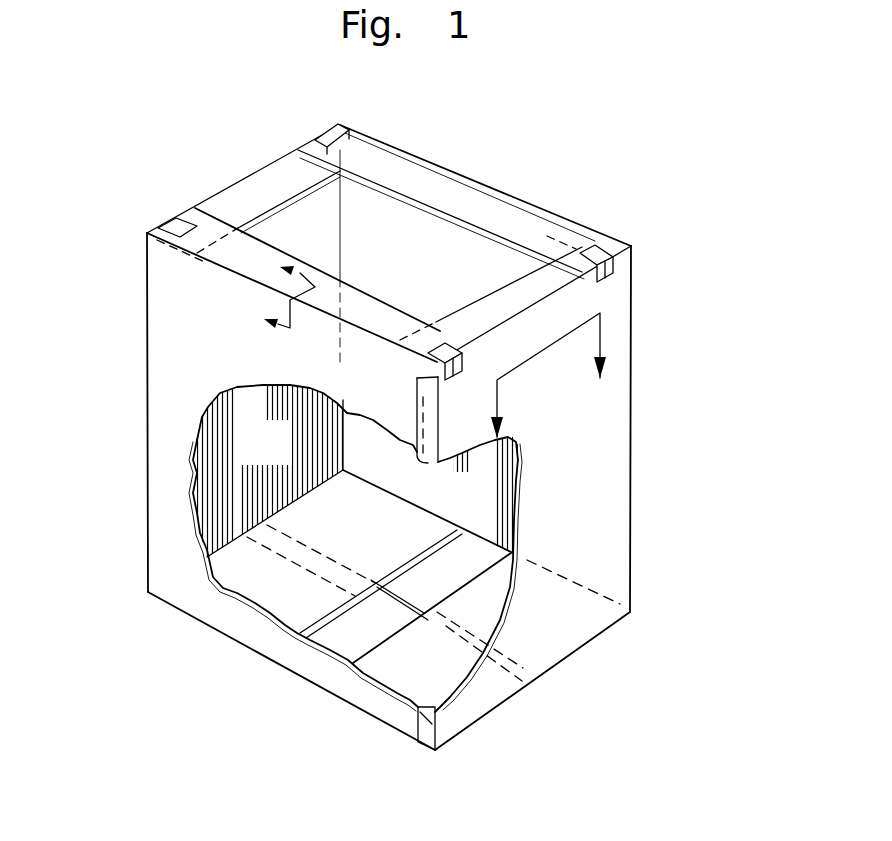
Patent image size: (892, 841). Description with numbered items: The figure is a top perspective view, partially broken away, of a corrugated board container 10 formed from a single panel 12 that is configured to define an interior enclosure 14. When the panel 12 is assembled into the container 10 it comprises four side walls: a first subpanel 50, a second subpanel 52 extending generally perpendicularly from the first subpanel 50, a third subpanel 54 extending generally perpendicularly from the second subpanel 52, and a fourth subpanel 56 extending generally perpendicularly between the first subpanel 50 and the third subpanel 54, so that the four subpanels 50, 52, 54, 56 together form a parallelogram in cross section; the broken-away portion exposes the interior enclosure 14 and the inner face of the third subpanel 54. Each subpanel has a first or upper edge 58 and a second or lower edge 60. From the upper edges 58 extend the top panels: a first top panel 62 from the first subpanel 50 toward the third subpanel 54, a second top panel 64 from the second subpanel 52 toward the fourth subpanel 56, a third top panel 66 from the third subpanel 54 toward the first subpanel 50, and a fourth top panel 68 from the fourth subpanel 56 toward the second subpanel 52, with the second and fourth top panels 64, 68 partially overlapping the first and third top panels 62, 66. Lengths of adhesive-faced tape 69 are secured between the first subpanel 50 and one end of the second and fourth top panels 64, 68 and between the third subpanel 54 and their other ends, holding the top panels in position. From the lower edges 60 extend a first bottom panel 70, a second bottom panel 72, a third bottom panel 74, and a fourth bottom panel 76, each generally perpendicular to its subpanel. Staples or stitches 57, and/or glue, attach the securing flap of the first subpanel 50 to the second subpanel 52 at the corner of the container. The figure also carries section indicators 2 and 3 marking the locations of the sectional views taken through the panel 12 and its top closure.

The corrugated board container 10 is at (662, 182).
The panel 12 is at (617, 412).
The interior enclosure 14 is at (490, 512).
The first subpanel 50 is at (600, 513).
The second subpanel 52 is at (172, 444).
The third subpanel 54 is at (295, 461).
The fourth subpanel 56 is at (445, 268).
The staples or stitches 57 is at (417, 388).
The first or upper edge 58 is at (245, 178).
The second or lower edge 60 is at (287, 508).
The first top panel 62 is at (503, 307).
The second top panel 64 is at (363, 308).
The third top panel 66 is at (273, 180).
The fourth top panel 68 is at (443, 190).
The adhesive-faced tape 69 is at (330, 137).
The first bottom panel 70 is at (450, 681).
The second bottom panel 72 is at (357, 630).
The third bottom panel 74 is at (285, 588).
The fourth bottom panel 76 is at (467, 552).
The section line 2- 2 is at (548, 377).
The section line 3- 3 is at (276, 289).